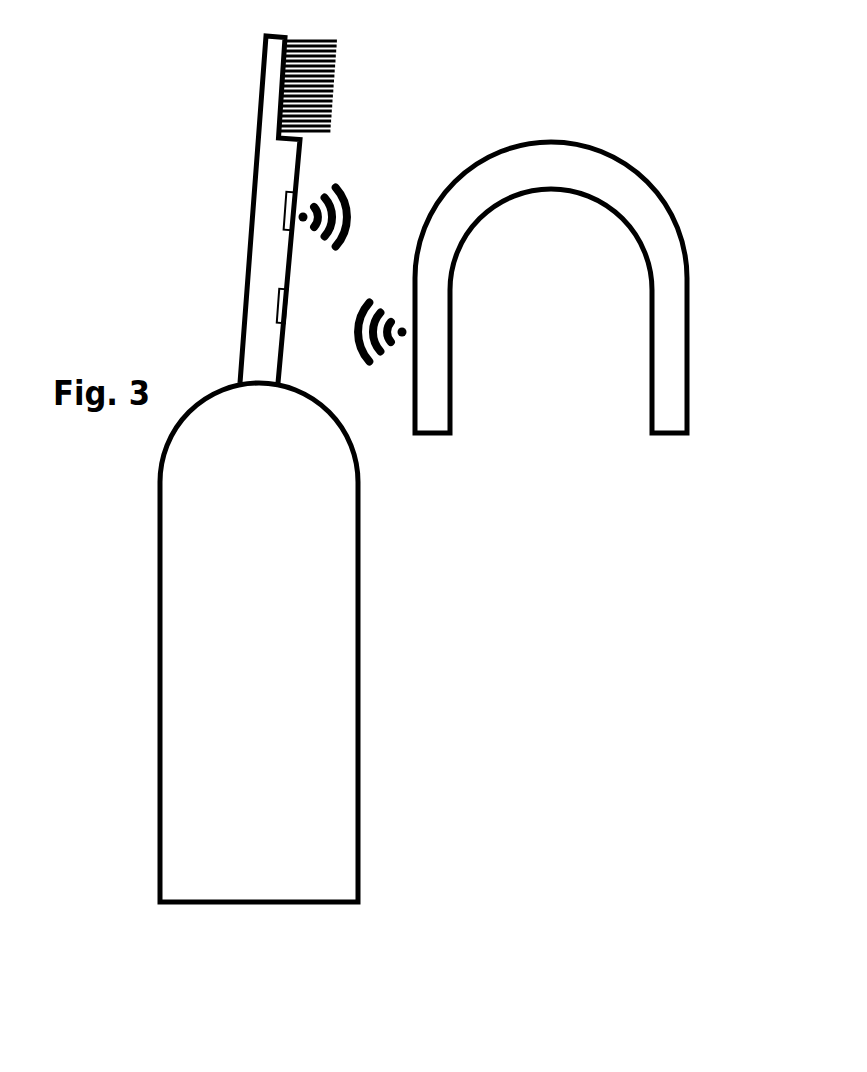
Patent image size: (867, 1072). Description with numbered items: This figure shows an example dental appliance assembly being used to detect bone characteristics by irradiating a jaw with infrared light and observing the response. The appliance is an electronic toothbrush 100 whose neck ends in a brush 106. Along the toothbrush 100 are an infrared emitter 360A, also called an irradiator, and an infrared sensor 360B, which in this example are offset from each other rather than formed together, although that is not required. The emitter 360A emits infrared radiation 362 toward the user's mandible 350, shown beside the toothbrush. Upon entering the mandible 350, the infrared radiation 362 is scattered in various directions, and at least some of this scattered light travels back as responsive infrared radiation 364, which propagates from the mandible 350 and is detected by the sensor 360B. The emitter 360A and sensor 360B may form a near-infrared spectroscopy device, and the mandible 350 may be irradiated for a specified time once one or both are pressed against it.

The electronic toothbrush 100 is at (404, 751).
The brush 106 is at (352, 97).
The mandible 350 is at (551, 141).
The infrared emitter 360A is at (285, 213).
The infrared sensor 360B is at (277, 313).
The infrared radiation 362 is at (336, 182).
The responsive infrared radiation 364 is at (370, 372).